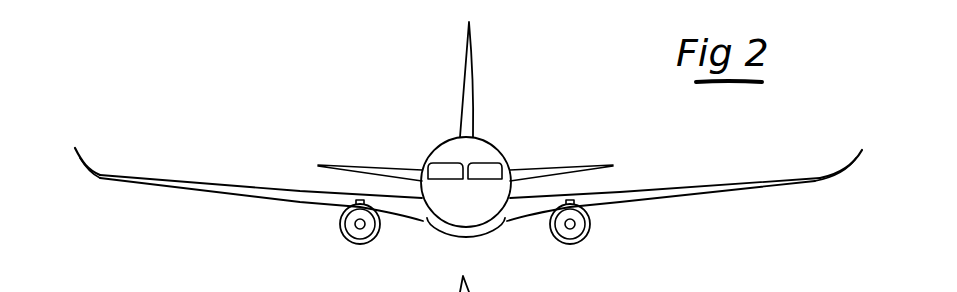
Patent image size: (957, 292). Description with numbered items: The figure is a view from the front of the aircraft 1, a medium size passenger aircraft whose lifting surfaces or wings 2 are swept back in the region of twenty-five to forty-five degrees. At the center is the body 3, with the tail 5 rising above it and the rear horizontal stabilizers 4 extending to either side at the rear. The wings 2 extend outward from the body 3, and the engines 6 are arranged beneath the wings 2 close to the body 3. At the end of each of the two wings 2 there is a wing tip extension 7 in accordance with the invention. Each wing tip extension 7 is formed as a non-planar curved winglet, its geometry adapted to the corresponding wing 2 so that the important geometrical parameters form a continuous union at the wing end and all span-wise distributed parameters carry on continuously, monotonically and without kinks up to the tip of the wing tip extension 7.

The aircraft 1 is at (465, 157).
The wings 2 is at (465, 196).
The body 3 is at (482, 150).
The rear horizontal stabilizers 4 is at (365, 170).
The tail 5 is at (467, 78).
The engines 6 is at (367, 234).
The wing tip extension 7 is at (90, 173).